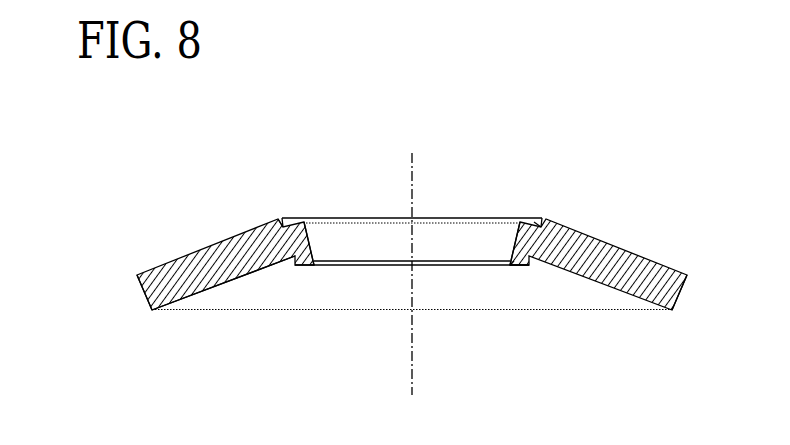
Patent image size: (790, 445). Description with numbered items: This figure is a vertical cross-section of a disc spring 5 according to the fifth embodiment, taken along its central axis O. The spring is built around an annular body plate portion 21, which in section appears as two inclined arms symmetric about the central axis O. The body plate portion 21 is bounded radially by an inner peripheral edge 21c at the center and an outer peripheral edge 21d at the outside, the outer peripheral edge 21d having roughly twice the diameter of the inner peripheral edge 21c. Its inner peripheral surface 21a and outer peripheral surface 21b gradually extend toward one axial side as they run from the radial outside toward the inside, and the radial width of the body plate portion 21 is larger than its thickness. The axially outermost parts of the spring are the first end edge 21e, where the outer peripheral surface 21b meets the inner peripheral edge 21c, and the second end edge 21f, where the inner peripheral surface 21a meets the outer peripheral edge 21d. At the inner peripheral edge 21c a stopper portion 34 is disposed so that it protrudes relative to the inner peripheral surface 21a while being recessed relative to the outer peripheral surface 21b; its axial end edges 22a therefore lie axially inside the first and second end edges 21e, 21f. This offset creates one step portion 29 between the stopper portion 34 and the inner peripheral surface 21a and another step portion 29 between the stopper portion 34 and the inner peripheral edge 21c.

The disc spring 5 is at (672, 137).
The body plate portion 21 is at (412, 212).
The inner peripheral surface 21a is at (207, 292).
The outer peripheral surface 21b is at (195, 247).
The inner peripheral edge 21c is at (534, 224).
The outer peripheral edge 21d is at (148, 306).
The first end edge 21e is at (548, 219).
The second end edge 21f is at (672, 312).
The axial end edge of stopper portion 22a is at (520, 221).
The step portion 29 is at (287, 224).
The stopper portion 34 is at (506, 264).
The central axis O is at (416, 177).